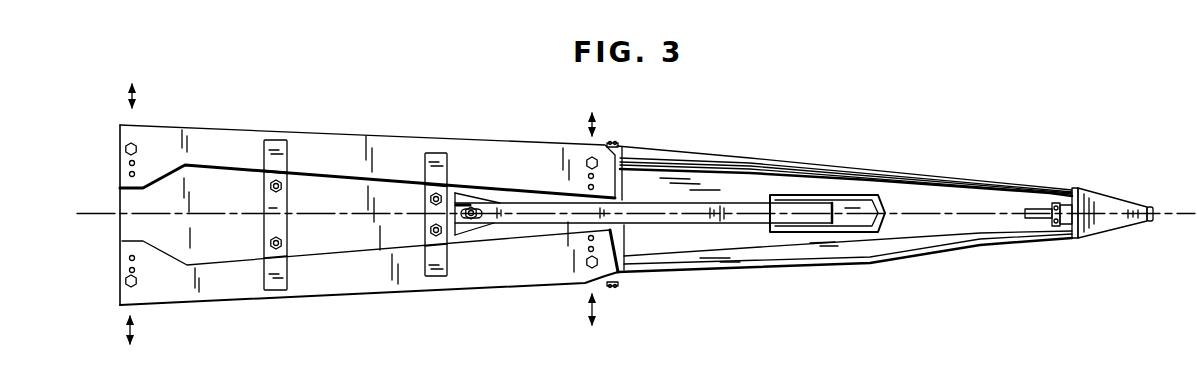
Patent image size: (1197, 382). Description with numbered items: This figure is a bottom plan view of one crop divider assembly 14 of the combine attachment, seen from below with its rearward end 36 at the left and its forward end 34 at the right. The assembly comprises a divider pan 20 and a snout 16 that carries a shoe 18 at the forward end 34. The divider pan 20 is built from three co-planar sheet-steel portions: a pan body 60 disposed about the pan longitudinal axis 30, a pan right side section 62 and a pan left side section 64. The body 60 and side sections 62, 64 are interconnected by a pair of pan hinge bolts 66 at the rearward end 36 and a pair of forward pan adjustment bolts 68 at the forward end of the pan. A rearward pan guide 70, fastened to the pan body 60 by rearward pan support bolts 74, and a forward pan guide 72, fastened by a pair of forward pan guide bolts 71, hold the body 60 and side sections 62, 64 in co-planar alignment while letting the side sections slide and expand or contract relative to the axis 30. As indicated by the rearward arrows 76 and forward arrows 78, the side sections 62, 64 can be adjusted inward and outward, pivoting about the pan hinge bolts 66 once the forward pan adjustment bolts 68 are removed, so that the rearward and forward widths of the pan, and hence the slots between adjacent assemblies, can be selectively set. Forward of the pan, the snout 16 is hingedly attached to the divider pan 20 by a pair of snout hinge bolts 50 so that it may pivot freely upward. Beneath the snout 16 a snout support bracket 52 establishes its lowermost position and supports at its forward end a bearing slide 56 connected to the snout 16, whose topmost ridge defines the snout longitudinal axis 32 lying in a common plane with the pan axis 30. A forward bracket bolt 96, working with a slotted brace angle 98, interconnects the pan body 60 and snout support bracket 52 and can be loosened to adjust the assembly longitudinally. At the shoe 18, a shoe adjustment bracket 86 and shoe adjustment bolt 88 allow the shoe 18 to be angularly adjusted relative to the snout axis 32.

The crop divider assembly 14 is at (885, 145).
The snout 16 is at (804, 156).
The shoe 18 is at (1103, 203).
The divider pan 20 is at (346, 132).
The pan longitudinal axis 30 is at (250, 216).
The snout longitudinal axis 32 is at (716, 225).
The forward end 34 is at (1167, 240).
The rearward end 36 is at (100, 179).
The snout hinge bolts 50 is at (620, 143).
The snout support bracket 52 is at (705, 204).
The bearing slide 56 is at (834, 199).
The pan body 60 is at (133, 224).
The pan right side section 62 is at (383, 156).
The pan left side section 64 is at (384, 270).
The pan hinge bolts 66 is at (125, 147).
The forward pan adjustment bolts 68 is at (588, 160).
The rearward pan guide 70 is at (283, 206).
The forward pan guide bolts 71 is at (429, 199).
The forward pan guide 72 is at (440, 157).
The rearward pan support bolts 74 is at (268, 187).
The rearward arrows 76 is at (133, 96).
The forward arrows 78 is at (594, 124).
The shoe adjustment bracket 86 is at (1036, 207).
The shoe adjustment bolt 88 is at (1060, 223).
The forward bracket bolt 96 is at (473, 206).
The brace angle 98 is at (462, 236).